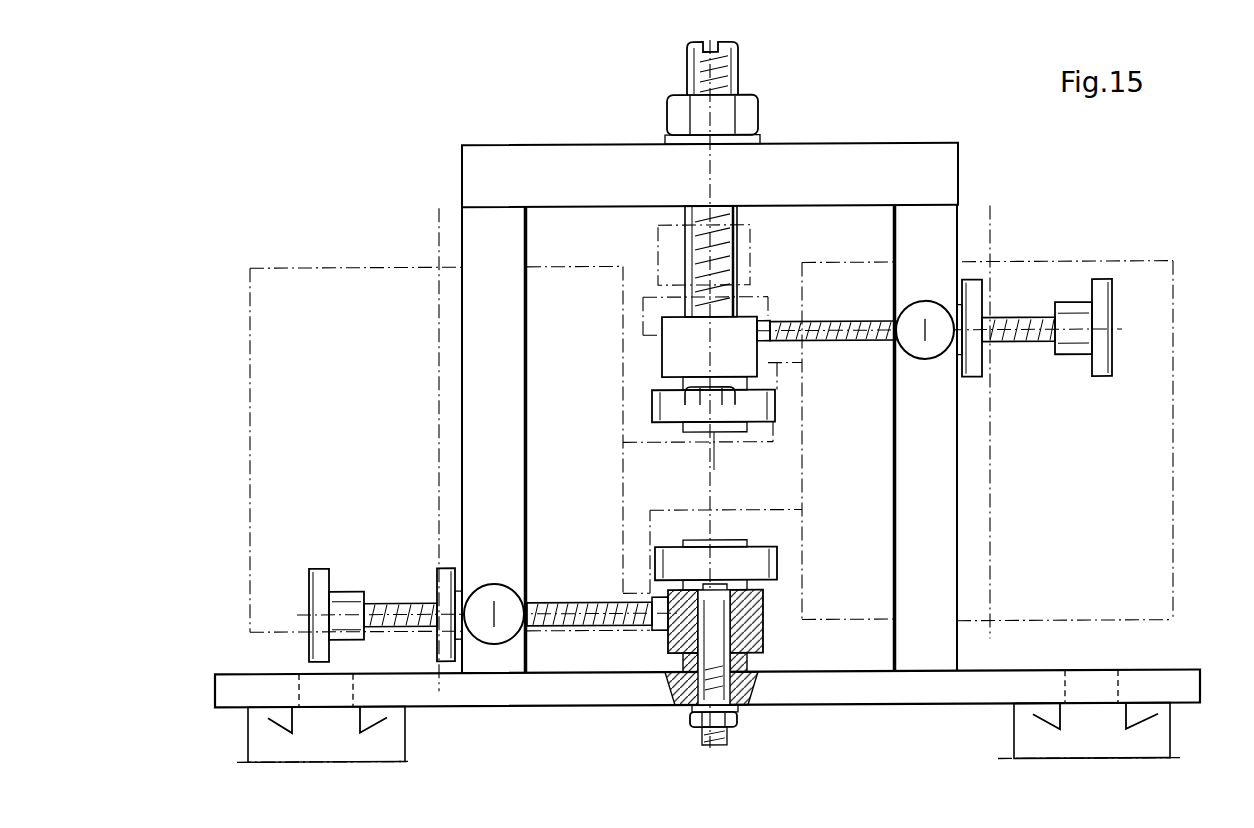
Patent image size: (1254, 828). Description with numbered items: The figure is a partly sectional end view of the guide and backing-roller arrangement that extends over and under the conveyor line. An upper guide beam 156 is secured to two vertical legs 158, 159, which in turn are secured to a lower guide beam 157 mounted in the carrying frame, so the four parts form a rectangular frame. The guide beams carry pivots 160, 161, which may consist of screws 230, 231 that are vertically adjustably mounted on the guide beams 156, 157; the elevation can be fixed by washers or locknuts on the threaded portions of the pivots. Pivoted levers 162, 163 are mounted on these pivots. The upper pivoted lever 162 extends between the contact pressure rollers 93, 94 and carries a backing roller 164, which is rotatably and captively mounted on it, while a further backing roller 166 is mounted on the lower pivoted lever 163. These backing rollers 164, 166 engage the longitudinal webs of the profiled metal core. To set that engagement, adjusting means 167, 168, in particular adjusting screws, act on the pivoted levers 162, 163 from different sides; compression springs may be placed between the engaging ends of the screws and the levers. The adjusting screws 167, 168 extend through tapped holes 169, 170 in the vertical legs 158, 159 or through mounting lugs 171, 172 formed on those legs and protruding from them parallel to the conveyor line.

The contact pressure roller 93 is at (1164, 393).
The contact pressure roller 94 is at (262, 413).
The upper guide beam 156 is at (858, 153).
The lower guide beam 157 is at (857, 690).
The vertical leg 158 is at (942, 450).
The vertical leg 159 is at (472, 403).
The pivot 160 is at (737, 250).
The pivot 161 is at (716, 634).
The upper pivoted lever 162 is at (662, 358).
The lower pivoted lever 163 is at (760, 608).
The backing roller 164 is at (663, 423).
The backing roller 166 is at (773, 548).
The adjusting means 167 is at (1017, 325).
The adjusting means 168 is at (392, 603).
The tapped hole 169 is at (915, 330).
The tapped hole 170 is at (503, 614).
The mounting lug 171 is at (932, 306).
The mounting lug 172 is at (503, 597).
The screw 230 is at (727, 100).
The screw 231 is at (692, 720).